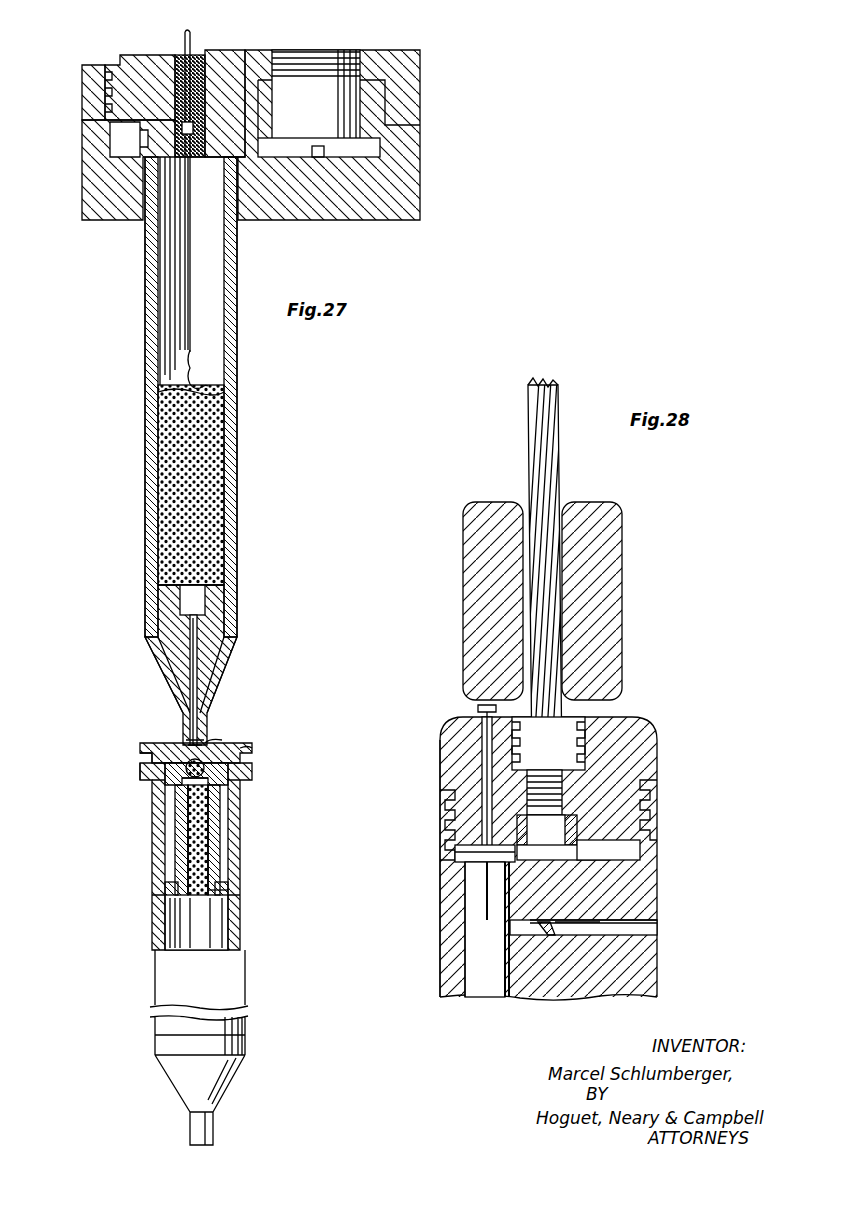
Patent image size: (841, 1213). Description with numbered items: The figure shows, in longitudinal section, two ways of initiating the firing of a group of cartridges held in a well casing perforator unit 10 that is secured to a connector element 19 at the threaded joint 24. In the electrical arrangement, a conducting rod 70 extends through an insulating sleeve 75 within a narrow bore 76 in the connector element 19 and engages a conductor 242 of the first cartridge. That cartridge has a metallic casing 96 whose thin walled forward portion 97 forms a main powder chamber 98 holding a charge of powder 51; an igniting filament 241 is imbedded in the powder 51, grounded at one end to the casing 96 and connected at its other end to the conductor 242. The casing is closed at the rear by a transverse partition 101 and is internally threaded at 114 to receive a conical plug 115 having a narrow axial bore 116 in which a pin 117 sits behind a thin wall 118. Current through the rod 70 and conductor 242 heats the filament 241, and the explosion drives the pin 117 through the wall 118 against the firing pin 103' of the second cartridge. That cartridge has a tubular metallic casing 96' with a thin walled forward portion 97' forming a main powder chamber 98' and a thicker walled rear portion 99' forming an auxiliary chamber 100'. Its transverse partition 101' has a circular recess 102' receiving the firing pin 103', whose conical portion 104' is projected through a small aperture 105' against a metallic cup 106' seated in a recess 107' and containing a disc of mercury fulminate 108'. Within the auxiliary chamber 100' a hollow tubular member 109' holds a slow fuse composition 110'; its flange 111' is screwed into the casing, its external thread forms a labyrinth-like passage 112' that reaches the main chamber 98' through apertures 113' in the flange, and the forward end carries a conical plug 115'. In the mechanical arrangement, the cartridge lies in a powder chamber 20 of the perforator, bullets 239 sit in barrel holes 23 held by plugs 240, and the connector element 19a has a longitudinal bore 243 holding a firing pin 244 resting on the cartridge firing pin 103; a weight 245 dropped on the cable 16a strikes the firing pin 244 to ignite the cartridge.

In FIG. 27, the perforator unit 10 is at (82, 176).
In FIG. 28, the perforator unit 10 is at (440, 960).
In FIG. 27, the connector element 19 is at (122, 62).
In FIG. 28, the connector element 19a is at (632, 752).
In FIG. 28, the powder chamber 20 is at (465, 975).
In FIG. 28, the barrel hole 23 is at (630, 931).
In FIG. 27, the threads 24 is at (82, 82).
In FIG. 28, the threads 24 is at (645, 816).
In FIG. 27, the charge of powder 51 is at (165, 452).
In FIG. 27, the conducting rod 70 is at (190, 32).
In FIG. 27, the insulating sleeve 75 is at (198, 60).
In FIG. 27, the narrow bore 76 is at (178, 68).
In FIG. 27, the metallic casing 96 is at (162, 397).
In FIG. 28, the metallic casing 96 is at (448, 929).
In FIG. 27, the thin walled forward portion 97 is at (162, 397).
In FIG. 27, the main powder chamber 98 is at (233, 254).
In FIG. 27, the transverse partition 101 is at (91, 137).
In FIG. 28, the transverse partition 101 is at (512, 806).
In FIG. 28, the firing pin 103 is at (451, 852).
In FIG. 27, the internal thread 114 is at (230, 608).
In FIG. 27, the conical plug 115 is at (222, 675).
In FIG. 27, the axial bore 116 is at (192, 652).
In FIG. 27, the pin 117 is at (193, 690).
In FIG. 27, the thin wall 118 is at (188, 742).
In FIG. 27, the conductor 242 is at (186, 268).
In FIG. 27, the igniting filament 241 is at (190, 372).
In FIG. 28, the cable 16a is at (532, 438).
In FIG. 28, the longitudinal bore 243 is at (483, 768).
In FIG. 28, the firing pin 244 is at (487, 742).
In FIG. 28, the weight 245 is at (610, 588).
In FIG. 28, the bullet 239 is at (530, 928).
In FIG. 28, the plug 240 is at (565, 930).
In FIG. 27, the transverse partition 101' is at (234, 747).
In FIG. 27, the circular recess 102' is at (262, 730).
In FIG. 27, the firing pin 103' is at (240, 718).
In FIG. 27, the conical portion 104' is at (155, 747).
In FIG. 27, the small aperture 105' is at (120, 752).
In FIG. 27, the metallic cup 106' is at (115, 775).
In FIG. 27, the recess 107' is at (149, 791).
In FIG. 27, the mercury fulminate 108' is at (247, 770).
In FIG. 27, the thicker walled rear portion 99' is at (229, 856).
In FIG. 27, the auxiliary chamber 100' is at (240, 787).
In FIG. 27, the hollow tubular member 109' is at (258, 840).
In FIG. 27, the slow fuse composition 110' is at (258, 840).
In FIG. 27, the flange 111' is at (268, 878).
In FIG. 27, the labyrinth-like passage 112' is at (165, 840).
In FIG. 27, the apertures 113' is at (218, 895).
In FIG. 27, the thin walled forward portion 97' is at (175, 917).
In FIG. 27, the main powder chamber 98' is at (231, 922).
In FIG. 27, the tubular metallic casing 96' is at (183, 1002).
In FIG. 27, the conical plug 115' is at (178, 1100).